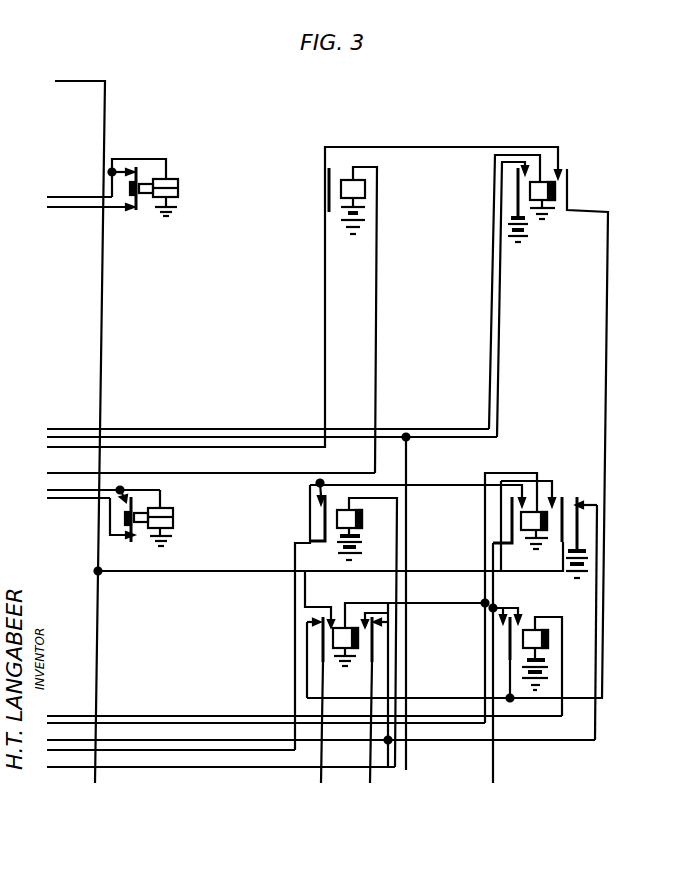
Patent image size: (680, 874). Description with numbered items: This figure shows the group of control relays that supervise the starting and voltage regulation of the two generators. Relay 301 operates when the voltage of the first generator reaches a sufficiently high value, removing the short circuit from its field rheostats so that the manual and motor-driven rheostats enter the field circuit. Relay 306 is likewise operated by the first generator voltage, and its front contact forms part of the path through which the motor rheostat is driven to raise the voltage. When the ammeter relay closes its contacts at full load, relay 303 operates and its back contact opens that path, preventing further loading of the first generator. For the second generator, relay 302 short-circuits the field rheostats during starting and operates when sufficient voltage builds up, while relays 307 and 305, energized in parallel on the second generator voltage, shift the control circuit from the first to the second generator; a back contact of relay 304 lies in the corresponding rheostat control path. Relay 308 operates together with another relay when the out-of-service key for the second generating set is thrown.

The relay 301 is at (178, 188).
The relay 302 is at (173, 517).
The relay 303 is at (365, 190).
The relay 304 is at (337, 519).
The relay 305 is at (333, 638).
The relay 306 is at (555, 190).
The relay 307 is at (521, 521).
The relay 308 is at (548, 640).